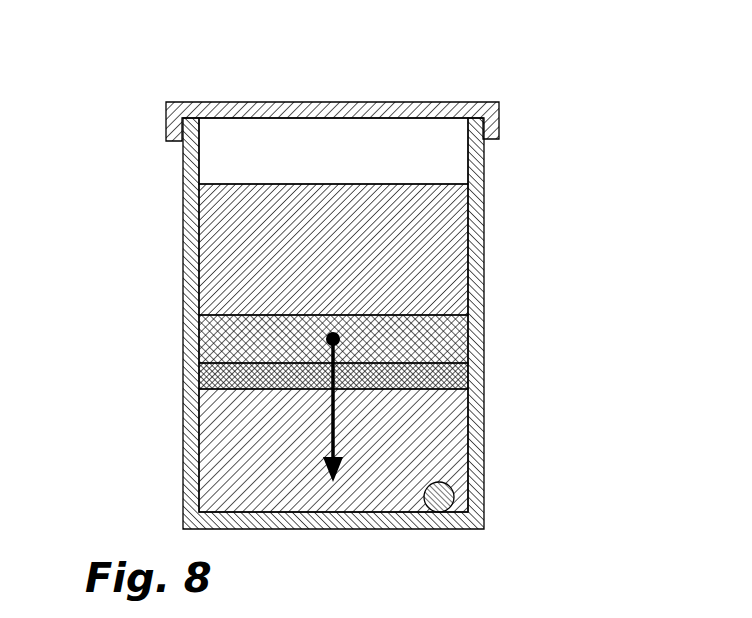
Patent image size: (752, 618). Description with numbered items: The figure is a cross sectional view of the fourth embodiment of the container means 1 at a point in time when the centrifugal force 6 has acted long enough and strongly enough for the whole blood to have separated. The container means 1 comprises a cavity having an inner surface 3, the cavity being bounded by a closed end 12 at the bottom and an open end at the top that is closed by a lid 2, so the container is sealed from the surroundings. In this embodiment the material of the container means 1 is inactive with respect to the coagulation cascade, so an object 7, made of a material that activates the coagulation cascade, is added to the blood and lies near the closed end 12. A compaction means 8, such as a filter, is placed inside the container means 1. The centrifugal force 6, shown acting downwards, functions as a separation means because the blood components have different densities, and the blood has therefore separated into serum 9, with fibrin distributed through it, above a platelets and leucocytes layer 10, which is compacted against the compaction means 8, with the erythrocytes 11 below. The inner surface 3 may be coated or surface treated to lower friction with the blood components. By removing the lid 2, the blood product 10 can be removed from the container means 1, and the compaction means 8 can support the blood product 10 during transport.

The container means 1 is at (120, 130).
The lid 2 is at (331, 103).
The inner surface 3 is at (444, 154).
The serum 9 is at (402, 261).
The platelets and leucocytes layer 10 is at (408, 344).
The compaction means 8 is at (446, 380).
The centrifugal force 6 is at (336, 402).
The erythrocytes 11 is at (413, 452).
The object 7 is at (441, 497).
The closed end 12 is at (376, 520).